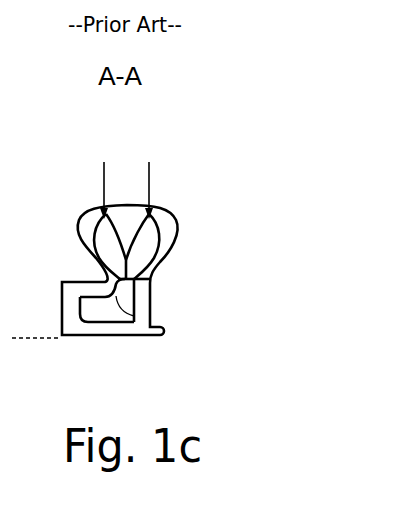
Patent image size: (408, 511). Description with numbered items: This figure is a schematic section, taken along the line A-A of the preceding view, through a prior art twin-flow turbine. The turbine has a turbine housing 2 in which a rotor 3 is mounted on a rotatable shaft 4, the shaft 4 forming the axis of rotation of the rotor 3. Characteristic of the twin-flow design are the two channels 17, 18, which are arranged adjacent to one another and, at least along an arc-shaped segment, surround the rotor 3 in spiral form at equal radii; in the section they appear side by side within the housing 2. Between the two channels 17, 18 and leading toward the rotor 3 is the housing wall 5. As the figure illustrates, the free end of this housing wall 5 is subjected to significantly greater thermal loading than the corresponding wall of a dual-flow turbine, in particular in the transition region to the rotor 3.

The turbine housing 2 is at (155, 212).
The rotor 3 is at (112, 308).
The shaft 4 is at (158, 318).
The housing wall 5 is at (133, 223).
The channel 17 is at (88, 235).
The channel 18 is at (148, 243).